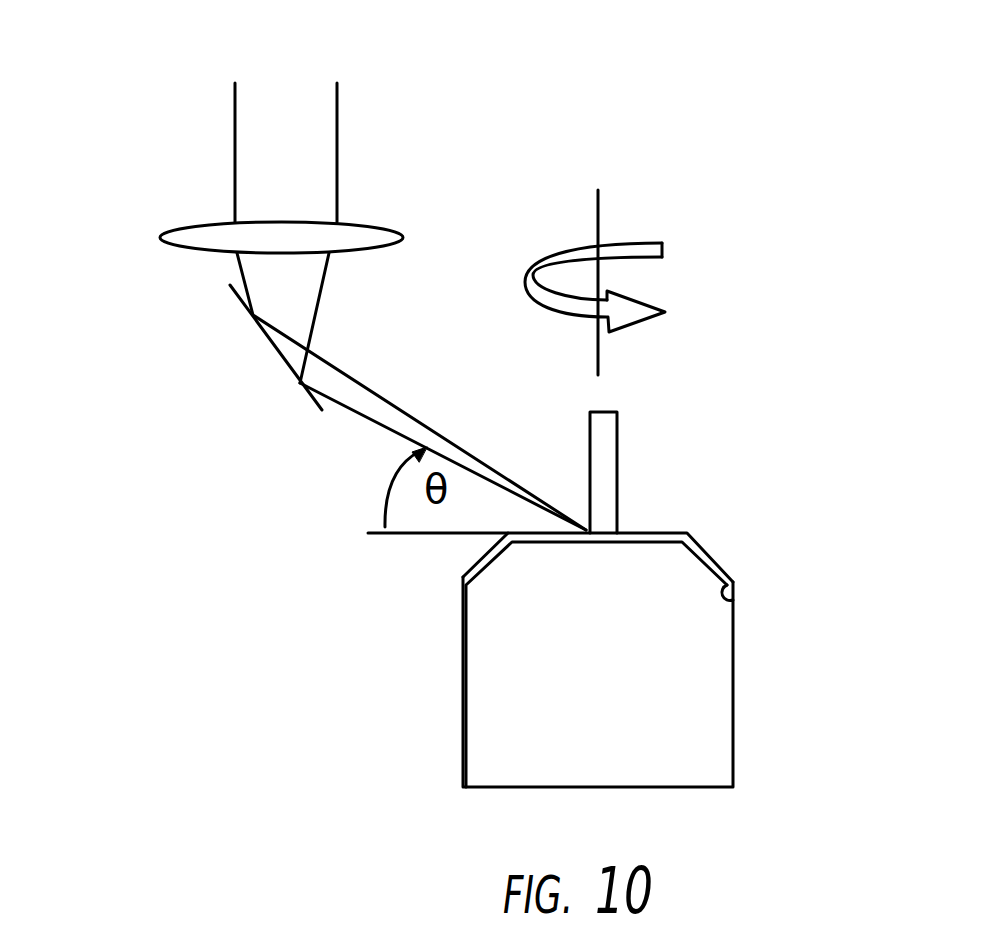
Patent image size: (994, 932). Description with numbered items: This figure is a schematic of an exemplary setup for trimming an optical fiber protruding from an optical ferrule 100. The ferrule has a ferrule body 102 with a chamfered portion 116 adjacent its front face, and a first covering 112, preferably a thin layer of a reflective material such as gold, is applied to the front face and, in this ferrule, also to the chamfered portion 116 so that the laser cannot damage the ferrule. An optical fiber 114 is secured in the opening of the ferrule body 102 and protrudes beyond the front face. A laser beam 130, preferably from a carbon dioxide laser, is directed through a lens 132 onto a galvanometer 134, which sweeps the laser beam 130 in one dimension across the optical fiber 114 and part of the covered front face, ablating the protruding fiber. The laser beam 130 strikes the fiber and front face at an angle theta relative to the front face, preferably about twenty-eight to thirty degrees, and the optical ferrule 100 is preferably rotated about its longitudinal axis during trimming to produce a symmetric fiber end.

The optical ferrule 100 is at (691, 599).
The ferrule body 102 is at (733, 725).
The first covering 112 is at (720, 562).
The optical fiber 114 is at (617, 443).
The chamfered portion 116 is at (735, 603).
The laser beam 130 is at (337, 135).
The lens 132 is at (160, 235).
The galvanometer 134 is at (307, 400).